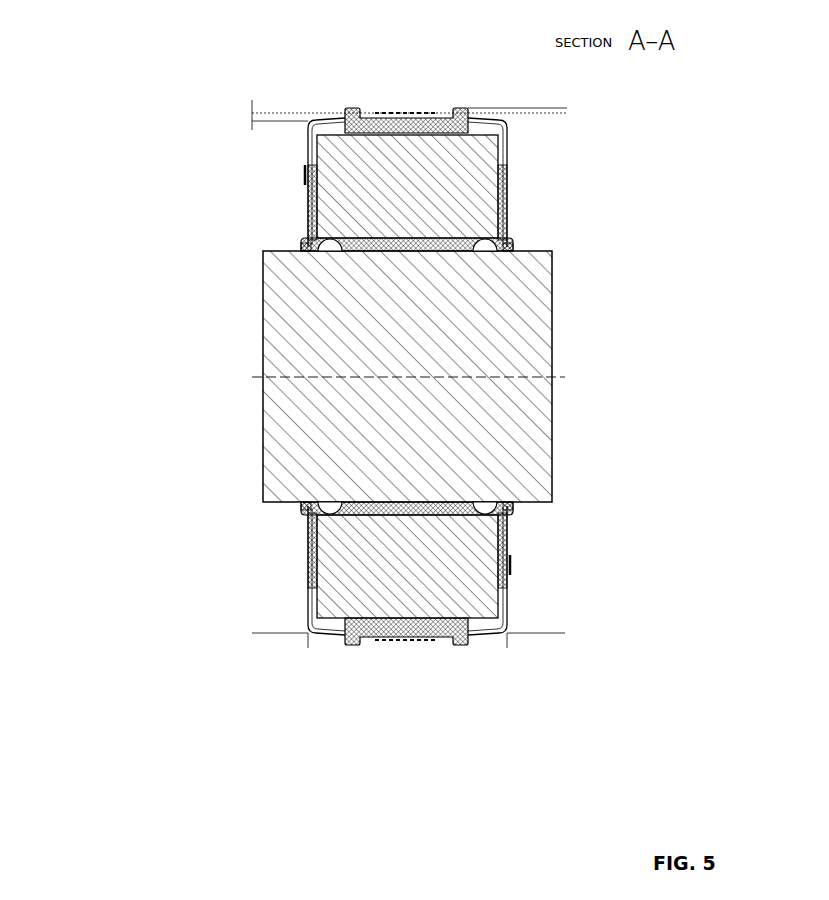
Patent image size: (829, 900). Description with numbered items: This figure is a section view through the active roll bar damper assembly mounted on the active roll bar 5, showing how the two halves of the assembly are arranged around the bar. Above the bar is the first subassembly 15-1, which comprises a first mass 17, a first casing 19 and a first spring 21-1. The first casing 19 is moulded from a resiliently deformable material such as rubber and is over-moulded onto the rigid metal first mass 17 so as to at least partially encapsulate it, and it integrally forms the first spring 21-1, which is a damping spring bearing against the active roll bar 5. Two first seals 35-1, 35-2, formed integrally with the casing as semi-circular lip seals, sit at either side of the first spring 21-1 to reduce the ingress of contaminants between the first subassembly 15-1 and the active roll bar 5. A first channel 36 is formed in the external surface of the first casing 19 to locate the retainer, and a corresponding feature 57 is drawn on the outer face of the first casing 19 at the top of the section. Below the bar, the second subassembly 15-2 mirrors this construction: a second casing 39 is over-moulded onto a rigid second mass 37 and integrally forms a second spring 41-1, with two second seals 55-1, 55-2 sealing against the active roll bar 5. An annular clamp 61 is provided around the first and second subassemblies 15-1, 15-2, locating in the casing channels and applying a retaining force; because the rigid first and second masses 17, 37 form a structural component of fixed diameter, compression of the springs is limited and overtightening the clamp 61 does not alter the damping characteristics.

The active roll bar 5 is at (565, 314).
The first subassembly 15-1 is at (379, 190).
The second subassembly 15-2 is at (415, 575).
The first mass 17 is at (476, 178).
The first casing 19 is at (503, 200).
The first spring 21-1 is at (390, 245).
The first seal 35-1 is at (300, 243).
The first seal 35-2 is at (507, 240).
The first channel 36 is at (373, 643).
The second mass 37 is at (470, 587).
The second casing 39 is at (306, 552).
The second spring 41-1 is at (425, 506).
The second seal 55-1 is at (300, 507).
The second seal 55-2 is at (508, 509).
The first cap 57 is at (372, 117).
The clamp 61 is at (407, 113).